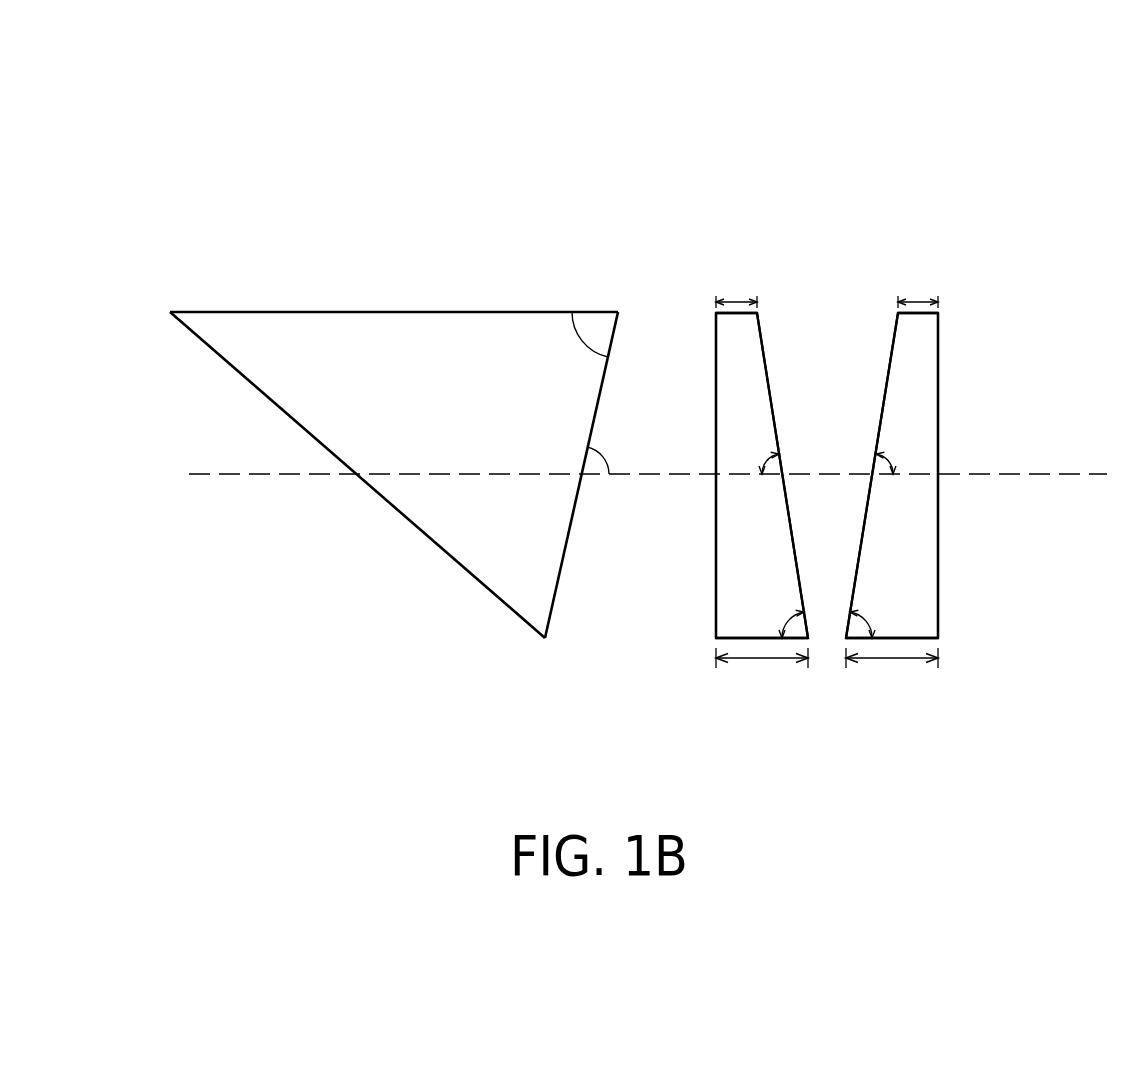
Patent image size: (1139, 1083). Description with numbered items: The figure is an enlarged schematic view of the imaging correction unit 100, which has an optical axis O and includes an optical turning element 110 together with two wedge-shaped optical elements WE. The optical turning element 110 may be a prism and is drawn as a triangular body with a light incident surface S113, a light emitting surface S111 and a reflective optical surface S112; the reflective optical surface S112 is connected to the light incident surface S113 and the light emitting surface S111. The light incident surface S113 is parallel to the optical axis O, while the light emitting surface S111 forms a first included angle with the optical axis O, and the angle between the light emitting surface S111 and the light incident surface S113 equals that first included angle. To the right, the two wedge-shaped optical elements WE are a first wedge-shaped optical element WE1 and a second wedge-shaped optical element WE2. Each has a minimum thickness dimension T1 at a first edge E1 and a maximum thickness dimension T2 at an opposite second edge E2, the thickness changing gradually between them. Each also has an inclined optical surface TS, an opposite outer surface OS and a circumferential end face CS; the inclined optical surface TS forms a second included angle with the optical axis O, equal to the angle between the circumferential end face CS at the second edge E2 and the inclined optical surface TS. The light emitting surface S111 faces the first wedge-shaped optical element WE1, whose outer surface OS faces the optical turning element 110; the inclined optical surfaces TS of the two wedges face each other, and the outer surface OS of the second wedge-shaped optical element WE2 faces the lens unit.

The imaging correction unit 100 is at (925, 127).
The optical turning element 110 is at (518, 582).
The light emitting surface S111 is at (558, 580).
The reflective optical surface S112 is at (432, 540).
The light incident surface S113 is at (462, 312).
The optical axis O is at (663, 477).
The wedge-shaped optical element WE is at (938, 236).
The first wedge-shaped optical element WE1 is at (733, 537).
The second wedge-shaped optical element WE2 is at (929, 537).
The circumferential end face CS is at (733, 310).
The inclined optical surface TS is at (772, 405).
The outer surface OS is at (716, 406).
The first edge E1 is at (740, 308).
The second edge E2 is at (788, 640).
The minimum thickness dimension T1 is at (827, 284).
The maximum thickness dimension T2 is at (827, 674).